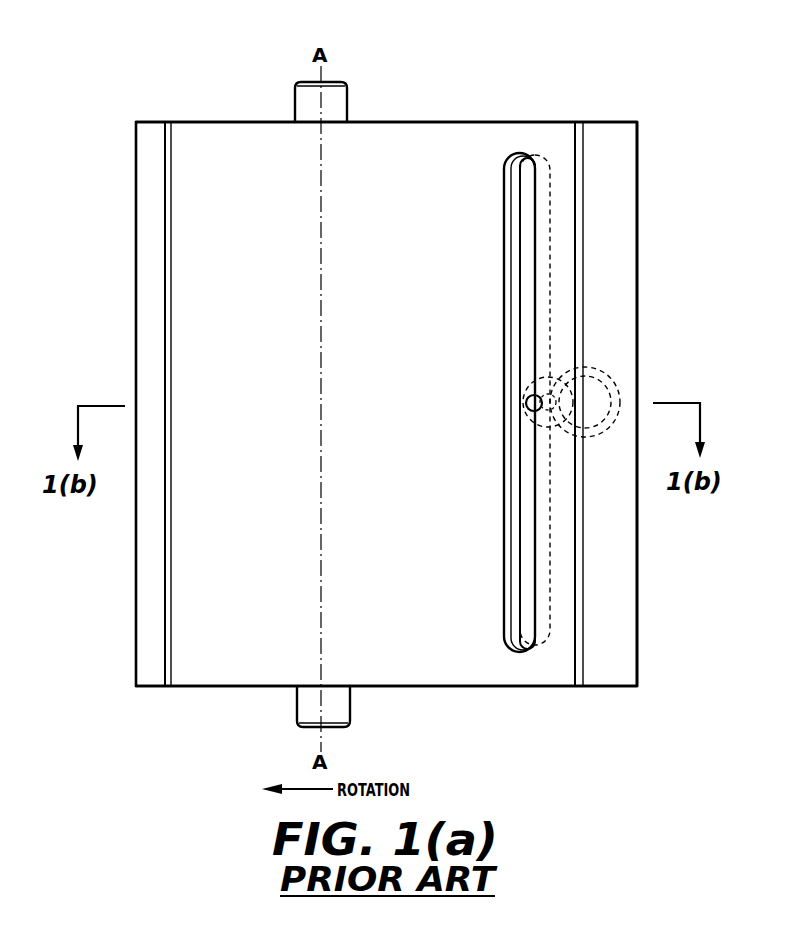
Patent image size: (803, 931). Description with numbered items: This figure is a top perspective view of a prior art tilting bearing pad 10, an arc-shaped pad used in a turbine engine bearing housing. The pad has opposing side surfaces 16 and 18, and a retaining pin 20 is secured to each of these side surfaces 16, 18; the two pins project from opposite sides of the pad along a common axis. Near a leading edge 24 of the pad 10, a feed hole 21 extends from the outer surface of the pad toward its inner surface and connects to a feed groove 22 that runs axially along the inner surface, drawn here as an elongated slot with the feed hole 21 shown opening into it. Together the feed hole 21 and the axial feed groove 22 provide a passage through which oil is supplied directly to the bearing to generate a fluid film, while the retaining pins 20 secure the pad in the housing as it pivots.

The tilting bearing pad 10 is at (98, 92).
The side surface 16 is at (492, 686).
The side surface 18 is at (465, 122).
The retaining pin 20 is at (340, 97).
The feed hole 21 is at (526, 408).
The feed groove 22 is at (508, 296).
The leading edge 24 is at (637, 548).